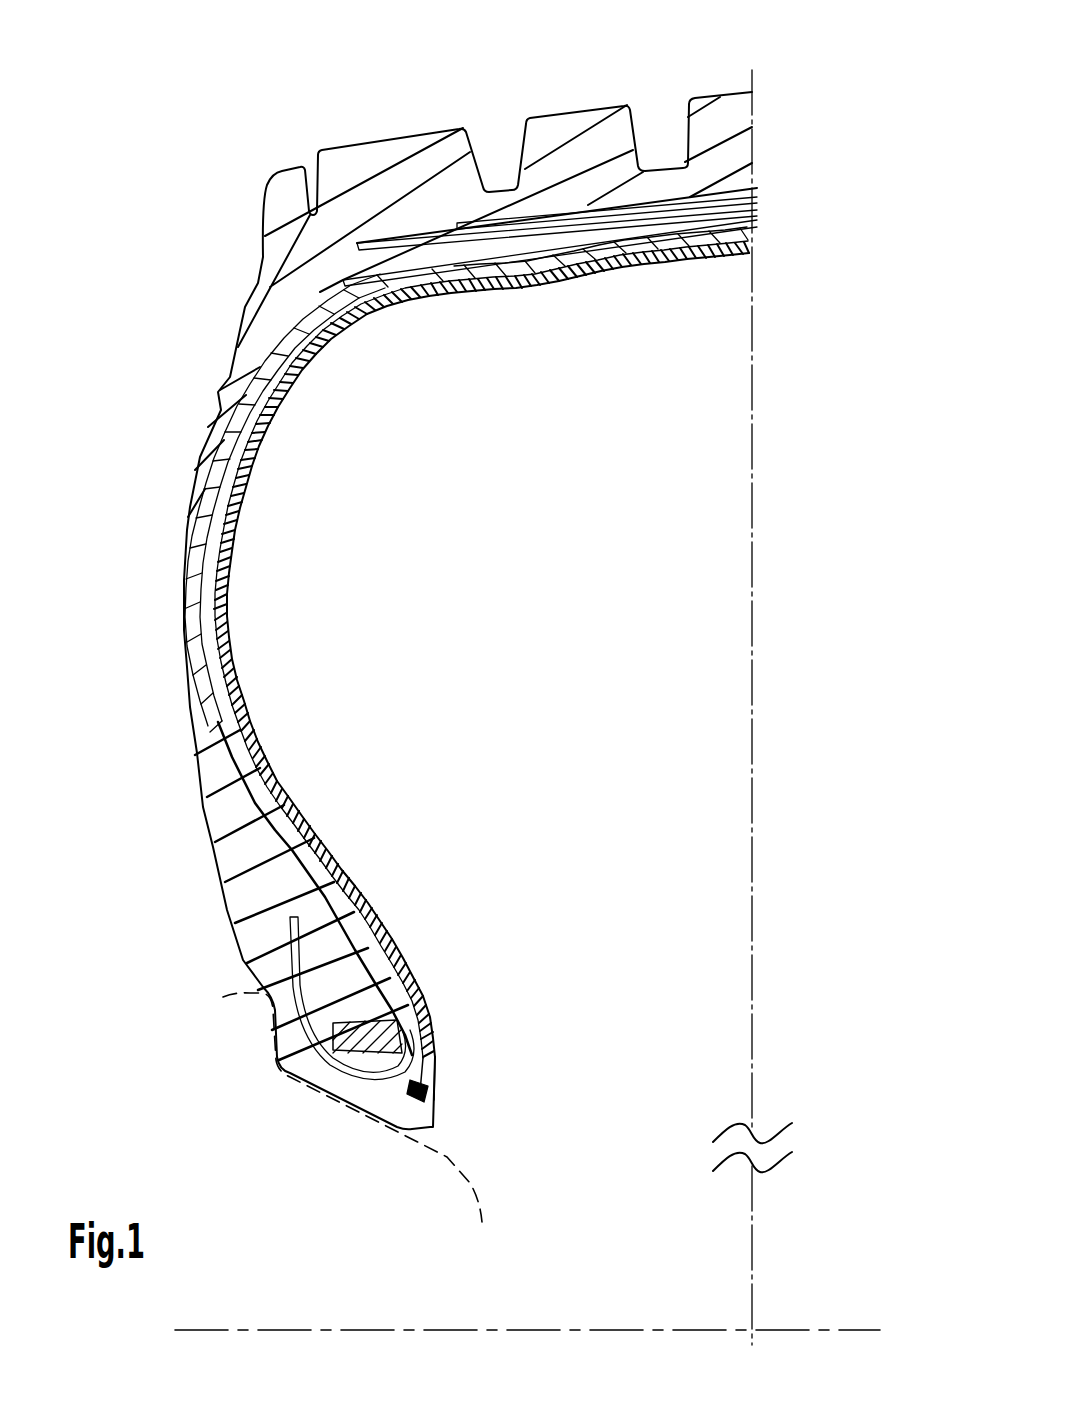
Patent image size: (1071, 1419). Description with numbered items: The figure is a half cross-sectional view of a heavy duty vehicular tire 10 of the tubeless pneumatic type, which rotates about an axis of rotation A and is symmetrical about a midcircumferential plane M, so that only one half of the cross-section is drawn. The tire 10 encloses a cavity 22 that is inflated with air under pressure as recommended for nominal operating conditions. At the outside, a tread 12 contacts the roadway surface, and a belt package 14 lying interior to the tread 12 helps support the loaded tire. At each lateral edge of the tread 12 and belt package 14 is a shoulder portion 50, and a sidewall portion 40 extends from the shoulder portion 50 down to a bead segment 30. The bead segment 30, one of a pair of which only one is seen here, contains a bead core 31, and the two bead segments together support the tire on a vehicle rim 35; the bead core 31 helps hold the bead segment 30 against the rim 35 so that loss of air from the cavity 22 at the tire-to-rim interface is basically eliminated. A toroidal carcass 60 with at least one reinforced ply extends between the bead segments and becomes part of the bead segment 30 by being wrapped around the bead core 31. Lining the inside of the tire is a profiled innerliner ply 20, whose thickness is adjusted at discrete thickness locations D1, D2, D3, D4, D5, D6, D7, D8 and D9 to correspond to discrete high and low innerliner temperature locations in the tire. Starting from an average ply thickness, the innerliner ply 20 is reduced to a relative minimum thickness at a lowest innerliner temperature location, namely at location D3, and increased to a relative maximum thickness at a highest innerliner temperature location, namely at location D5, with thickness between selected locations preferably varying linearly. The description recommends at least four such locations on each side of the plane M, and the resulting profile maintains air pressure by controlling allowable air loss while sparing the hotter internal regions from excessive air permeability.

The vehicular tire 10 is at (608, 88).
The tread 12 is at (437, 187).
The belt package 14 is at (433, 272).
The profiled innerliner ply 20 is at (268, 447).
The cavity 22 is at (560, 505).
The bead segment 30 is at (247, 970).
The bead core 31 is at (365, 1063).
The vehicle rim 35 is at (450, 1157).
The sidewall portion 40 is at (182, 569).
The shoulder portion 50 is at (253, 287).
The toroidal carcass 60 is at (193, 707).
The discrete thickness location D1 is at (446, 1055).
The discrete thickness location D2 is at (373, 889).
The discrete thickness location D3 is at (230, 645).
The discrete thickness location D4 is at (236, 506).
The discrete thickness location D5 is at (341, 367).
The discrete thickness location D6 is at (514, 290).
The discrete thickness location D7 is at (587, 268).
The discrete thickness location D8 is at (661, 259).
The discrete thickness location D9 is at (746, 256).
The midcircumferential plane M is at (753, 502).
The axis of rotation A is at (360, 1329).